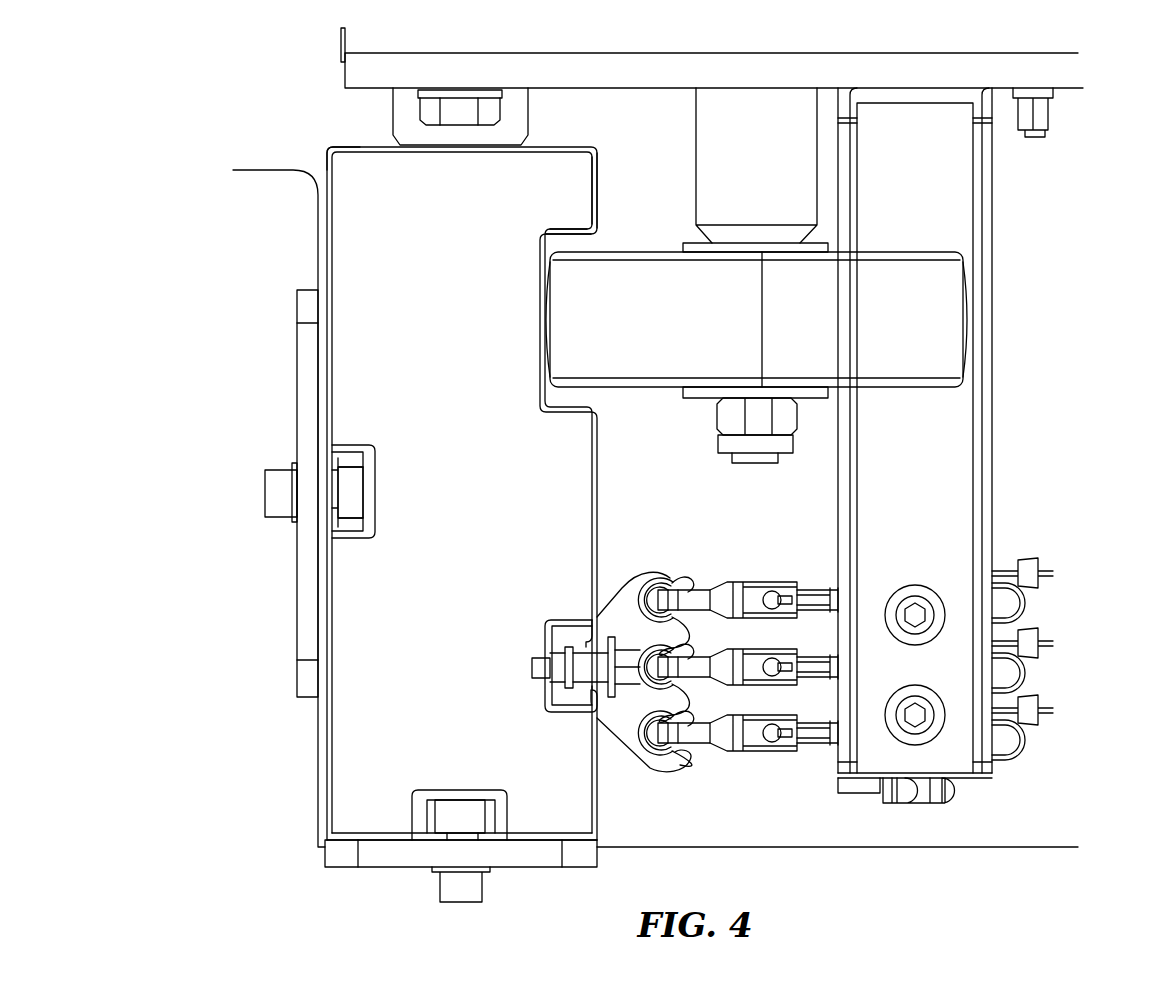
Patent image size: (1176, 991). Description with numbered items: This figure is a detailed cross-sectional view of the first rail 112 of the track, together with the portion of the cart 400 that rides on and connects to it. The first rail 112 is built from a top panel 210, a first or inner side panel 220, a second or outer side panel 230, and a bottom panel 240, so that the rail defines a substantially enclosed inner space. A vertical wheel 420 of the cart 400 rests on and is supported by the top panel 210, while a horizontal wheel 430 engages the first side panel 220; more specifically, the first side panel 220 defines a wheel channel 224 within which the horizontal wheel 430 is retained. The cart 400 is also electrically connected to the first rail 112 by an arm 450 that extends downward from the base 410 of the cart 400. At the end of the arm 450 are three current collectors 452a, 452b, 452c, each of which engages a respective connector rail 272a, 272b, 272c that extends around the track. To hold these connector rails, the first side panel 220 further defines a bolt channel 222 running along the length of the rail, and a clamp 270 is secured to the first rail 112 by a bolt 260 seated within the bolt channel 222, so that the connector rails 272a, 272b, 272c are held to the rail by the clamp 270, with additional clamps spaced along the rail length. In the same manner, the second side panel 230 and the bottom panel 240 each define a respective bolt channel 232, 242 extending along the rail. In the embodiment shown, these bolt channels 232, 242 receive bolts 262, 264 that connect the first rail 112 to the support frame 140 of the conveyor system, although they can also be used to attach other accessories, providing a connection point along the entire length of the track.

The cart 400 is at (342, 45).
The vertical wheel 420 is at (393, 122).
The base 410 is at (1083, 95).
The first rail 112 is at (327, 160).
The top panel 210 is at (565, 147).
The first side panel 220 is at (597, 185).
The wheel channel 224 is at (582, 236).
The second side panel 230 is at (318, 230).
The bolt channel 232 is at (355, 445).
The bolt 262 is at (355, 535).
The bolt channel 242 is at (430, 790).
The bolt 264 is at (465, 800).
The bottom panel 240 is at (377, 840).
The bolt 260 is at (555, 690).
The bolt channel 222 is at (565, 622).
The horizontal wheel 430 is at (928, 252).
The arm 450 is at (993, 458).
The clamp 270 is at (615, 592).
The connector rail 272a is at (688, 580).
The connector rail 272b is at (690, 682).
The connector rail 272c is at (690, 758).
The current collector 452a is at (740, 582).
The current collector 452b is at (737, 650).
The current collector 452c is at (745, 755).
The support frame 140 is at (1023, 847).